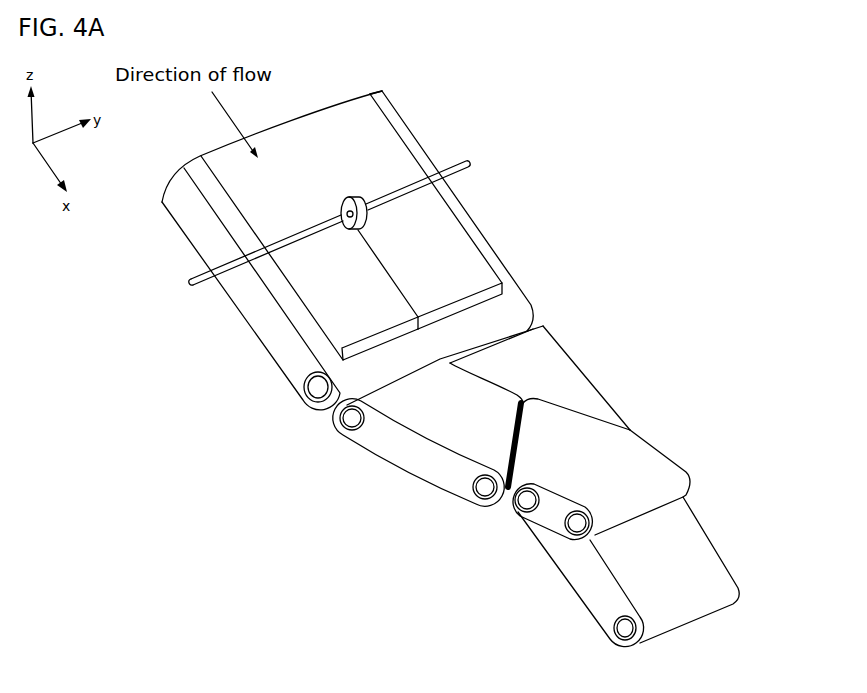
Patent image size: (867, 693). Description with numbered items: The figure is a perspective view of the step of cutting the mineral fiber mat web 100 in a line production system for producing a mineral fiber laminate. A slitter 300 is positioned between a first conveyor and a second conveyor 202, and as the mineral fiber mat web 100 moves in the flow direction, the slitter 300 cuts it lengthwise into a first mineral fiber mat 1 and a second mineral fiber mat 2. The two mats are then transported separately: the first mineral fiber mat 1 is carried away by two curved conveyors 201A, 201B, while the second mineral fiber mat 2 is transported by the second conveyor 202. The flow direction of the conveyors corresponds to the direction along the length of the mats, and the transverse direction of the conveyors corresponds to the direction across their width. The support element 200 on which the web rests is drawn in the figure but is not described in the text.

The mineral fiber mat web 100 is at (350, 143).
The sheet 200 is at (262, 298).
The first mineral fiber mat 1 is at (343, 306).
The second mineral fiber mat 2 is at (458, 273).
The slitter 300 is at (354, 196).
The second conveyor 202 is at (540, 370).
The curved conveyor 201A is at (393, 453).
The curved conveyor 201B is at (622, 473).